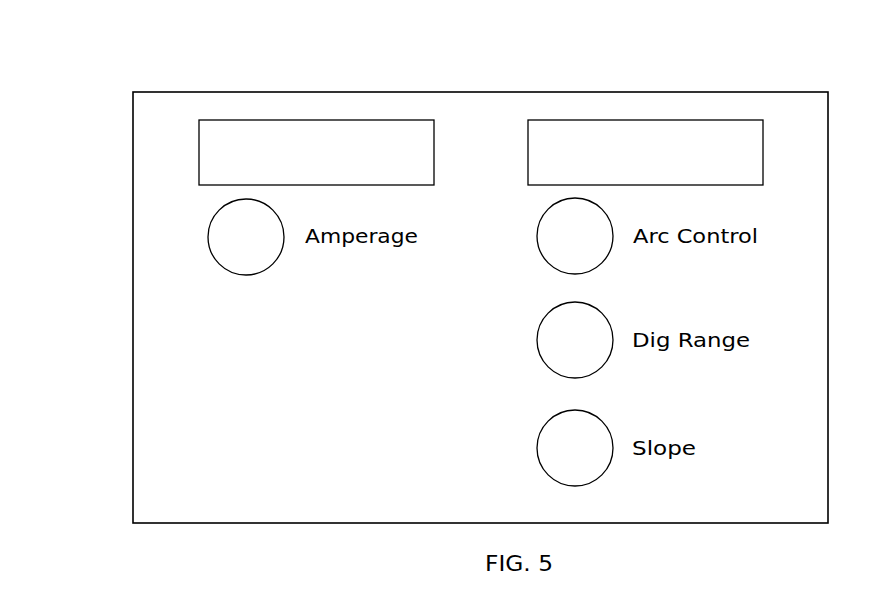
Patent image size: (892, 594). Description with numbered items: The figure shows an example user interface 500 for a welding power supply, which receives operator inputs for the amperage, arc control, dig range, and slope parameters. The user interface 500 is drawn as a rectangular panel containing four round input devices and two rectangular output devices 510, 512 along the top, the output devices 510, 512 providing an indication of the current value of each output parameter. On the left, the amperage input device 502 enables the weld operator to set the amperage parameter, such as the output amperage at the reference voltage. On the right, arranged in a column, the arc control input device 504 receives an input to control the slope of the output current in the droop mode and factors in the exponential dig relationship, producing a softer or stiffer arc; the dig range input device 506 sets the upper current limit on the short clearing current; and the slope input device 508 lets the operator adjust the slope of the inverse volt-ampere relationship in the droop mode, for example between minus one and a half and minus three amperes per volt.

The user interface 500 is at (97, 56).
The amperage input device 502 is at (219, 211).
The arc control input device 504 is at (546, 214).
The dig range input device 506 is at (547, 315).
The slope input device 508 is at (543, 426).
The output device 510 is at (333, 120).
The output device 512 is at (715, 120).